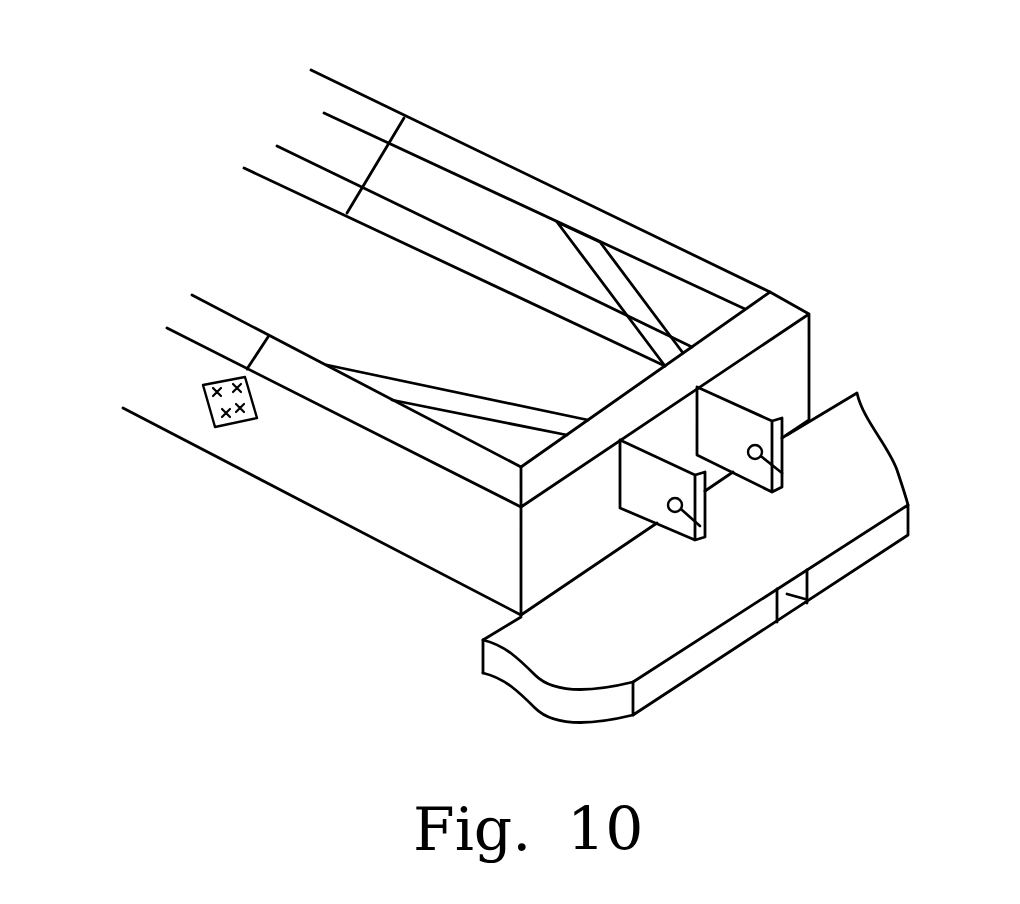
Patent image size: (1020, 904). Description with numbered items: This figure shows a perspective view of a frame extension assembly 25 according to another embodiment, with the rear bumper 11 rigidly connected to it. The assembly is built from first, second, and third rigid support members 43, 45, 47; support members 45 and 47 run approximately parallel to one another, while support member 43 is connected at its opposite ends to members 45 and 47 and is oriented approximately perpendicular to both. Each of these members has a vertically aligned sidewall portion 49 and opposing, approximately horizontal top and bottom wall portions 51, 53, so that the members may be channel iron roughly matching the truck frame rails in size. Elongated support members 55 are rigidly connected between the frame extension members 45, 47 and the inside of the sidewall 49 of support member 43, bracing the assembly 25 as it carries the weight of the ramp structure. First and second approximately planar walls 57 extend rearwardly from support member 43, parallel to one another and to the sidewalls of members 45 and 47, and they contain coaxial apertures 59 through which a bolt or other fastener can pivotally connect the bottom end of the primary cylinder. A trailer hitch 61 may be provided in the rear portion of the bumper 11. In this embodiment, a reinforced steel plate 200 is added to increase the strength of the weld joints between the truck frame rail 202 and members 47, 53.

The rear bumper 11 is at (665, 677).
The frame extension assembly 25 is at (310, 517).
The first rigid support member 43 is at (795, 348).
The second rigid support member 45 is at (695, 273).
The third rigid support member 47 is at (390, 507).
The sidewall portion 49 is at (738, 307).
The top wall portion 51 is at (748, 290).
The bottom wall portion 53 is at (552, 292).
The elongated support member 55 is at (417, 388).
The planar wall 57 is at (778, 490).
The aperture 59 is at (760, 456).
The trailer hitch 61 is at (798, 598).
The reinforced steel plate 200 is at (227, 427).
The truck frame rail 202 is at (356, 111).